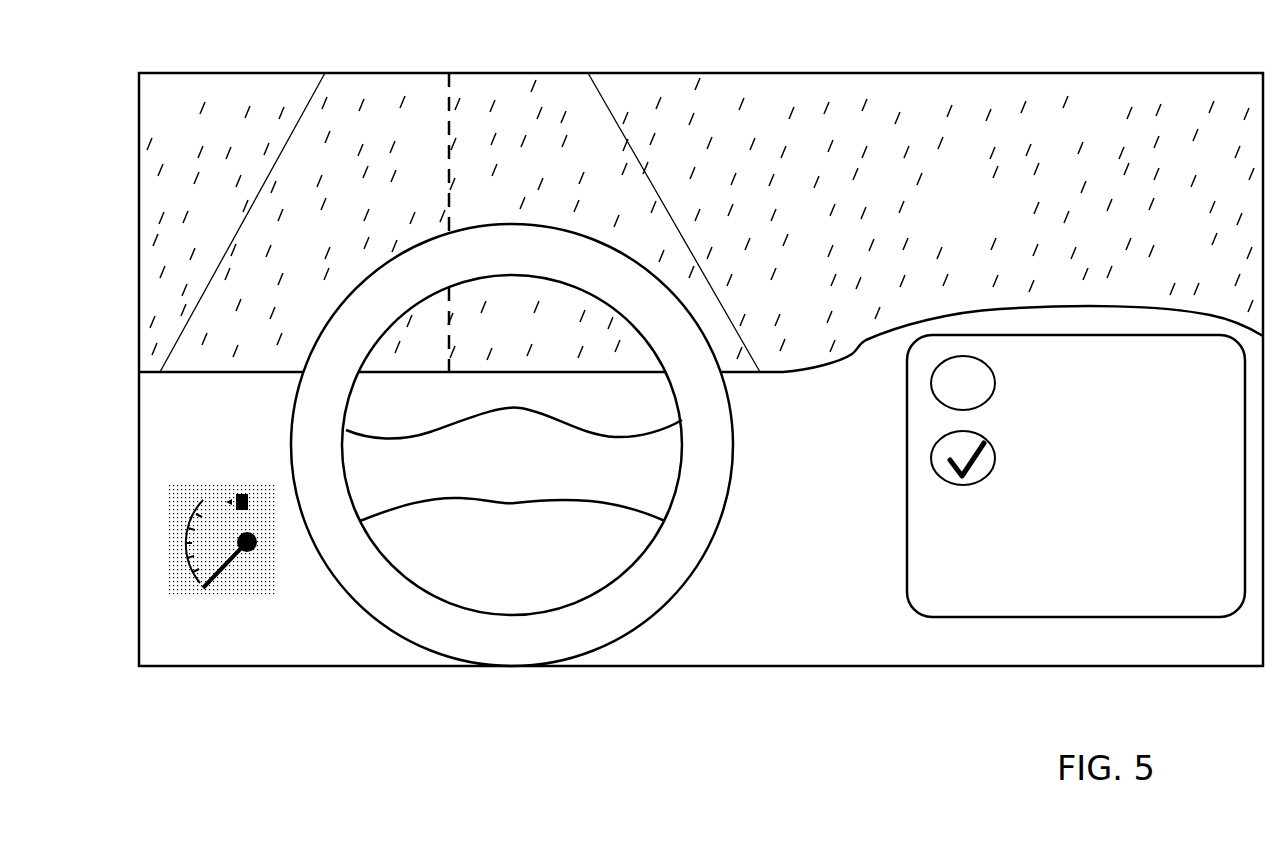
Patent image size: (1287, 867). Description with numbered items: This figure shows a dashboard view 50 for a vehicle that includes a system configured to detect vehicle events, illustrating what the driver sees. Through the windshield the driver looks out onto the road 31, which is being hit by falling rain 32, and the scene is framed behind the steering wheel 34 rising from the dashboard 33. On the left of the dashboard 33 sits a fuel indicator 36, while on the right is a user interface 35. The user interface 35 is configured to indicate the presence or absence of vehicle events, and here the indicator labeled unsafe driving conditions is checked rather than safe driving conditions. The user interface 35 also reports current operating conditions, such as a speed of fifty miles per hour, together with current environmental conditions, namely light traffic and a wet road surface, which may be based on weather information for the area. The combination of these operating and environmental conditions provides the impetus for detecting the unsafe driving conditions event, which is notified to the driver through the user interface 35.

The dashboard view 50 is at (701, 352).
The road 31 is at (485, 77).
The rain 32 is at (700, 219).
The dashboard 33 is at (701, 478).
The steering wheel 34 is at (590, 633).
The user interface 35 is at (1076, 491).
The fuel indicator 36 is at (221, 500).